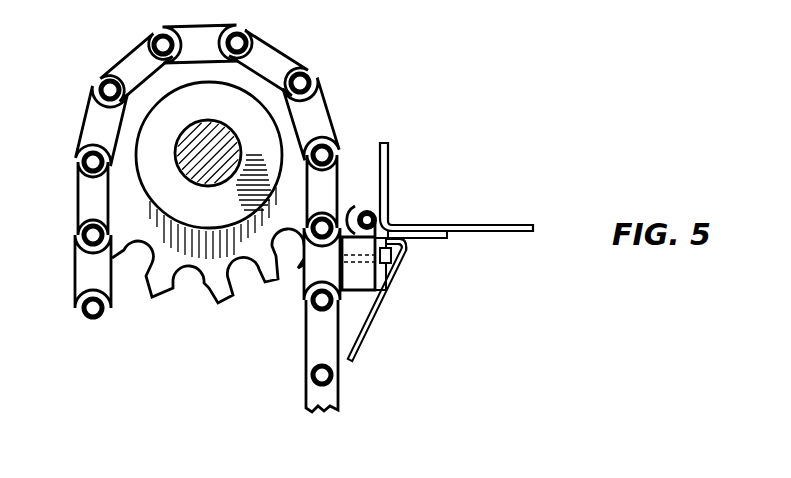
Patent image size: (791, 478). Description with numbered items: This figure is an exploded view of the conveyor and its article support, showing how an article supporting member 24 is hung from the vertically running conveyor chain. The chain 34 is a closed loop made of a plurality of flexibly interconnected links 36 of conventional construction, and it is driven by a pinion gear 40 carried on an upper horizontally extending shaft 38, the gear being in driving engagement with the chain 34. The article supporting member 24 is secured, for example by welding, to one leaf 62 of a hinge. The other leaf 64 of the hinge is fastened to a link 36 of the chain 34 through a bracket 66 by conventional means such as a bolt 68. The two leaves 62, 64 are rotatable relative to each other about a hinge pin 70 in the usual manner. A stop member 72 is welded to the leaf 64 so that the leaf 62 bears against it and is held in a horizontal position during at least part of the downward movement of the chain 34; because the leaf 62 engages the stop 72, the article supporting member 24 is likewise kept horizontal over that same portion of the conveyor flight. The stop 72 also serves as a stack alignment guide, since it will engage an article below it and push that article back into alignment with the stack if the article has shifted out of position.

The article supporting member 24 is at (505, 225).
The chain 34 is at (78, 284).
The link 36 is at (308, 218).
The upper horizontally extending shaft 38 is at (194, 128).
The pinion gear 40 is at (228, 288).
The leaf 62 is at (440, 238).
The leaf 64 is at (343, 277).
The bracket 66 is at (350, 224).
The bolt 68 is at (396, 263).
The hinge pin 70 is at (370, 219).
The stop member 72 is at (410, 250).